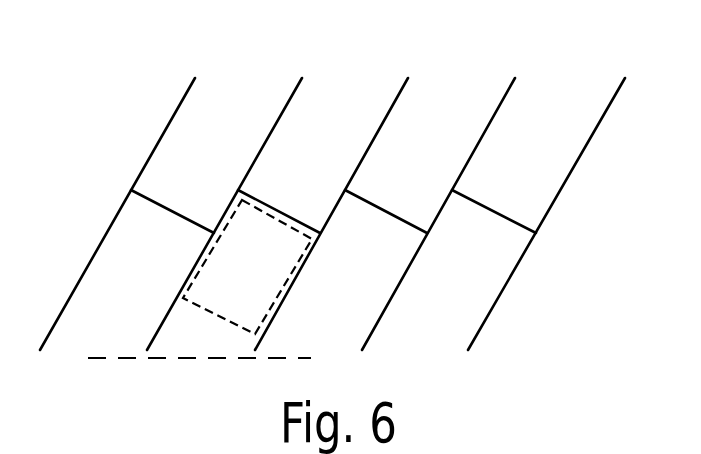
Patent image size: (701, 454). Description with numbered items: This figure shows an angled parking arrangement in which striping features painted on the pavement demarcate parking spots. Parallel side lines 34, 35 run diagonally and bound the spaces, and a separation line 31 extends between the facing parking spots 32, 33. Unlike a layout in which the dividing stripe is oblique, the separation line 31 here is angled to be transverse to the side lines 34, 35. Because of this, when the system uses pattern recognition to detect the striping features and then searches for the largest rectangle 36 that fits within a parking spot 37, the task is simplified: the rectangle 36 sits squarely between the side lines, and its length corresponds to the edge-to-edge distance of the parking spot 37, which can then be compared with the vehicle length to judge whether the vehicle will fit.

The separation line 31 is at (147, 200).
The parking spot 32 is at (224, 151).
The parking spot 33 is at (143, 300).
The side line 34 is at (187, 92).
The side line 35 is at (294, 92).
The largest rectangle 36 is at (288, 218).
The parking spot 37 is at (186, 335).